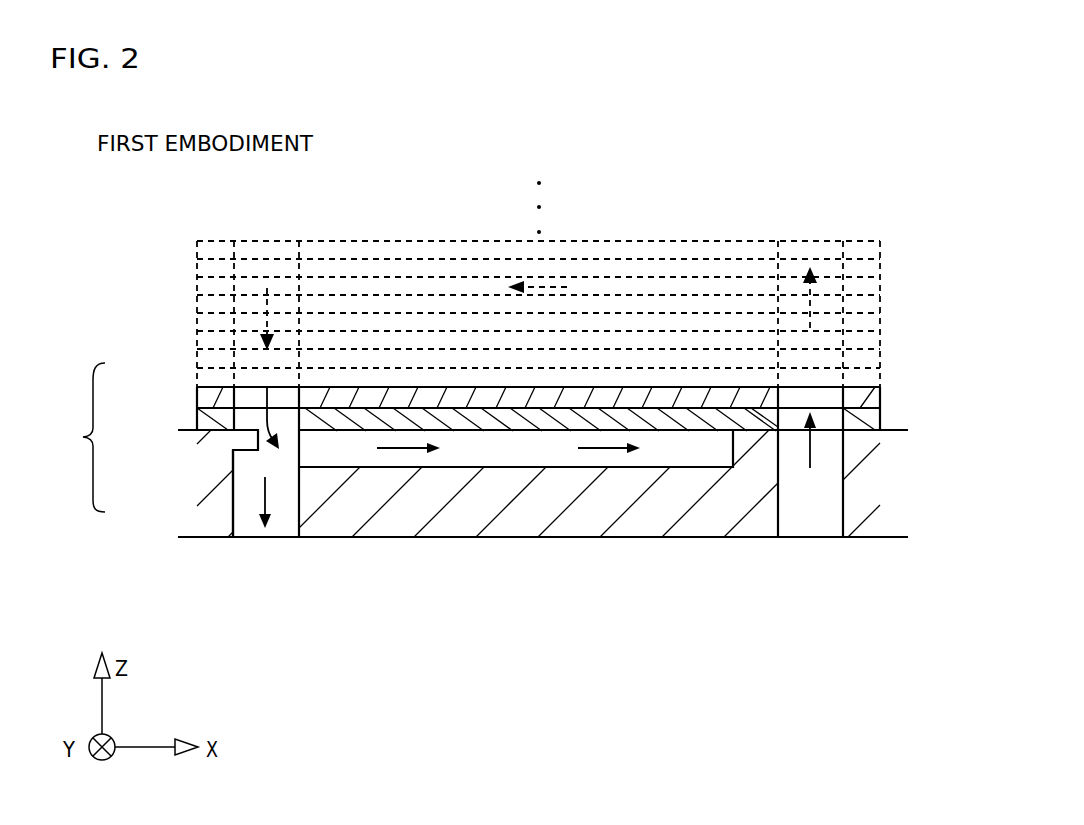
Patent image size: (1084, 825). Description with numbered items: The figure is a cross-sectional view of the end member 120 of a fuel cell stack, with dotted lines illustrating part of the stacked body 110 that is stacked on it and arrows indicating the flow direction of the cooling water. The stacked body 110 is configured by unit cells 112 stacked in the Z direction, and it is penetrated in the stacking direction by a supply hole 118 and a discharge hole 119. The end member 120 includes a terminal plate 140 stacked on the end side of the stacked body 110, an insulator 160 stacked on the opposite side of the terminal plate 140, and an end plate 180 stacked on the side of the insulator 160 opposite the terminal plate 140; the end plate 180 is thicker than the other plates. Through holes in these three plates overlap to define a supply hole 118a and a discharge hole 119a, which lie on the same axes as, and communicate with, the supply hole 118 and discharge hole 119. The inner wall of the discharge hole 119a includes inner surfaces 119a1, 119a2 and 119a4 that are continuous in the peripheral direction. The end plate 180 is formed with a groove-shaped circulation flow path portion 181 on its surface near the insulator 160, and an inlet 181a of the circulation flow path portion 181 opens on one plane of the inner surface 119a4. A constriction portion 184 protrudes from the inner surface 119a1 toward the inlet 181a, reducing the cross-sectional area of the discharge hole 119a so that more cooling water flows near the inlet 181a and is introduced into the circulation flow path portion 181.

The stacked body 110 is at (186, 300).
The unit cell 112 is at (862, 372).
The supply hole 118 is at (778, 268).
The supply hole 118a is at (815, 523).
The discharge hole 119 is at (299, 262).
The discharge hole 119a is at (250, 528).
The inner surface 119a1 is at (233, 523).
The inner surface 119a2 is at (277, 497).
The inner surface 119a4 is at (291, 525).
The end member 120 is at (475, 503).
The terminal plate 140 is at (222, 402).
The insulator 160 is at (220, 423).
The end plate 180 is at (197, 493).
The circulation flow path portion 181 is at (517, 450).
The inlet 181a is at (283, 448).
The constriction portion 184 is at (252, 438).